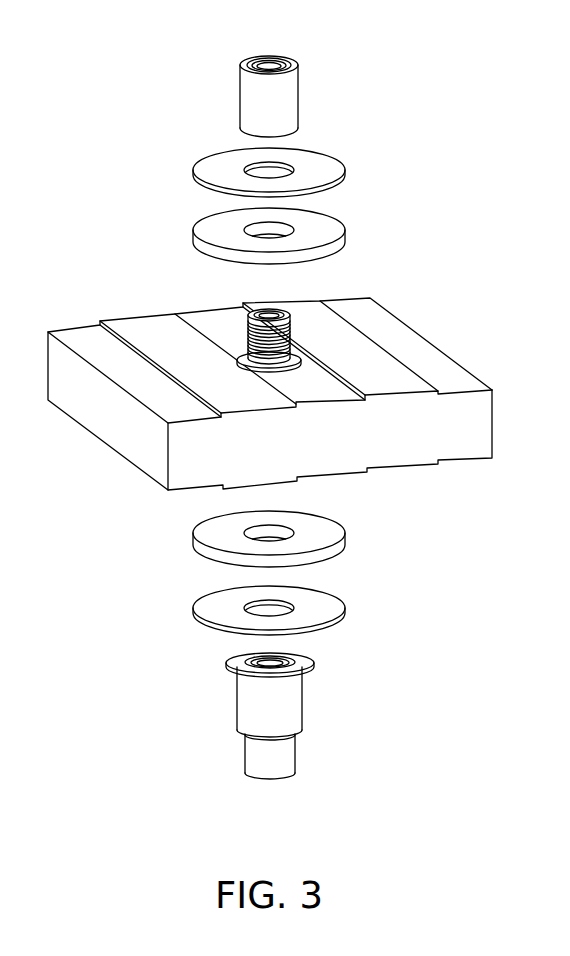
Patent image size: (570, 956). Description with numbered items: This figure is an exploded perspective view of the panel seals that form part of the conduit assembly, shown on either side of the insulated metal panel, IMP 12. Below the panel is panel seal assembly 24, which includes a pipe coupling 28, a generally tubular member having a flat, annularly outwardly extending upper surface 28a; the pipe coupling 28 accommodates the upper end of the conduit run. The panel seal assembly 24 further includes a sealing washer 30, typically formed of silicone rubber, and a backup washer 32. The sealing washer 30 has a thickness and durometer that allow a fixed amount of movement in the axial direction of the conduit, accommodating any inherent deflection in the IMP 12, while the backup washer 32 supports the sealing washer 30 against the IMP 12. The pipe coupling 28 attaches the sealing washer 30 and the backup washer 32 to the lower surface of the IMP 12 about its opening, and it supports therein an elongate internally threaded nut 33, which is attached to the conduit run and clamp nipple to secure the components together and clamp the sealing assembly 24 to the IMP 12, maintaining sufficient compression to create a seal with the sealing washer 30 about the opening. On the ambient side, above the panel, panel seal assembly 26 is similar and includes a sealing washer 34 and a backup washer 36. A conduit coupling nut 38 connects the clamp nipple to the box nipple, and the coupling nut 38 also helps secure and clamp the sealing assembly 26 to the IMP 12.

The IMP 12 is at (483, 400).
The panel seal assembly 24 is at (315, 633).
The panel seal assembly 26 is at (324, 160).
The pipe coupling 28 is at (282, 703).
The upper surface 28a is at (312, 664).
The sealing washer 30 is at (334, 541).
The backup washer 32 is at (334, 612).
The internally threaded nut 33 is at (240, 663).
The sealing washer 34 is at (280, 227).
The backup washer 36 is at (334, 168).
The conduit coupling nut 38 is at (297, 83).